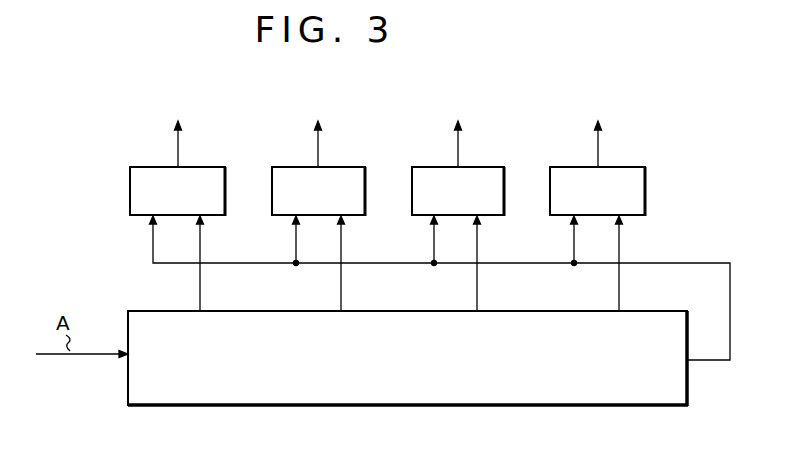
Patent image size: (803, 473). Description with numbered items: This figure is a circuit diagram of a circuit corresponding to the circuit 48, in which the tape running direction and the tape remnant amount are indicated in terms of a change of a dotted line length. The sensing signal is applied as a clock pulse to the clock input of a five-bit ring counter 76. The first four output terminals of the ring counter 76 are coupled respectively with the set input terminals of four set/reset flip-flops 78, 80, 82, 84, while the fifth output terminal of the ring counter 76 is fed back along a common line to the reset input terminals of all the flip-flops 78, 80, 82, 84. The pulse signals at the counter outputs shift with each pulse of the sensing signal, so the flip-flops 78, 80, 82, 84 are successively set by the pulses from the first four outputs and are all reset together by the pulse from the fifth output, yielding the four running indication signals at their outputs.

The ring counter 76 is at (621, 405).
The circuit 48 is at (392, 442).
The set/reset flip-flop 78 is at (215, 175).
The set/reset flip-flop 80 is at (354, 175).
The set/reset flip-flop 82 is at (493, 175).
The set/reset flip-flop 84 is at (633, 175).